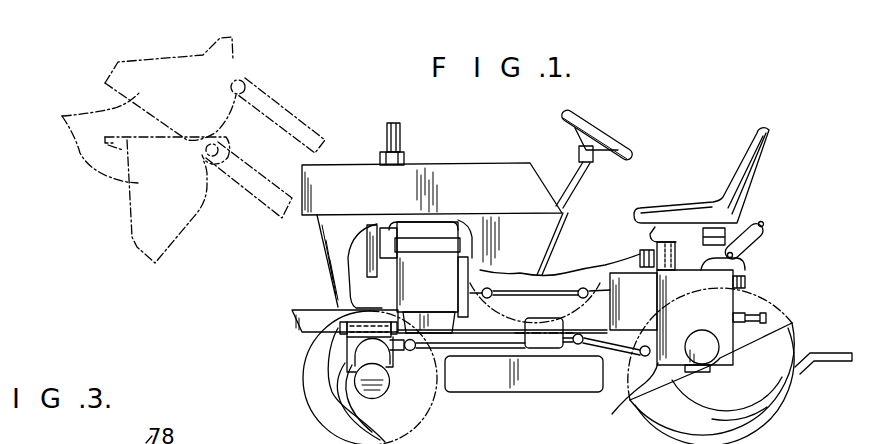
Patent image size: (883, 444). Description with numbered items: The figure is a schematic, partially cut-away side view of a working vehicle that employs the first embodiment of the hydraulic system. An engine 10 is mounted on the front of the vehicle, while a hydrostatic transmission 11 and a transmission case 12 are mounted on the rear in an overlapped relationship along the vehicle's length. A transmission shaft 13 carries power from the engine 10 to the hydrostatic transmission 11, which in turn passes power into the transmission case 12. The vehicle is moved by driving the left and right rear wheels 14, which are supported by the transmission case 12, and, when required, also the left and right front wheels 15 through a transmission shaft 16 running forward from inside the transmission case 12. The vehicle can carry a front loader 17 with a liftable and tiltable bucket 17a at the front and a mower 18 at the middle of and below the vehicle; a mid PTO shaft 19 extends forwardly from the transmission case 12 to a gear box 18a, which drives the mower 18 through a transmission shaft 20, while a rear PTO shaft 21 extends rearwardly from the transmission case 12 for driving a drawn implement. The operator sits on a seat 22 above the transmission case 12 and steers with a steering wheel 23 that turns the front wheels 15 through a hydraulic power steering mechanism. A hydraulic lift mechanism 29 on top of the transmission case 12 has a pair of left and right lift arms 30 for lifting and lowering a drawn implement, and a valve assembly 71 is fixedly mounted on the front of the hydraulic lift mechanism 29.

The engine 10 is at (428, 240).
The hydrostatic transmission 11 is at (616, 272).
The transmission case 12 is at (619, 415).
The transmission shaft 13 is at (550, 291).
The rear wheels 14 is at (772, 379).
The front wheels 15 is at (302, 372).
The transmission shaft 16 is at (455, 349).
The front loader 17 is at (261, 83).
The bucket 17a is at (127, 150).
The mower 18 is at (547, 375).
The gear box 18a is at (535, 318).
The mid PTO shaft 19 is at (667, 340).
The transmission shaft 20 is at (604, 352).
The rear PTO shaft 21 is at (740, 320).
The seat 22 is at (707, 207).
The steering wheel 23 is at (590, 125).
The hydraulic lift mechanism 29 is at (738, 264).
The lift arms 30 is at (768, 229).
The valve assembly 71 is at (640, 248).